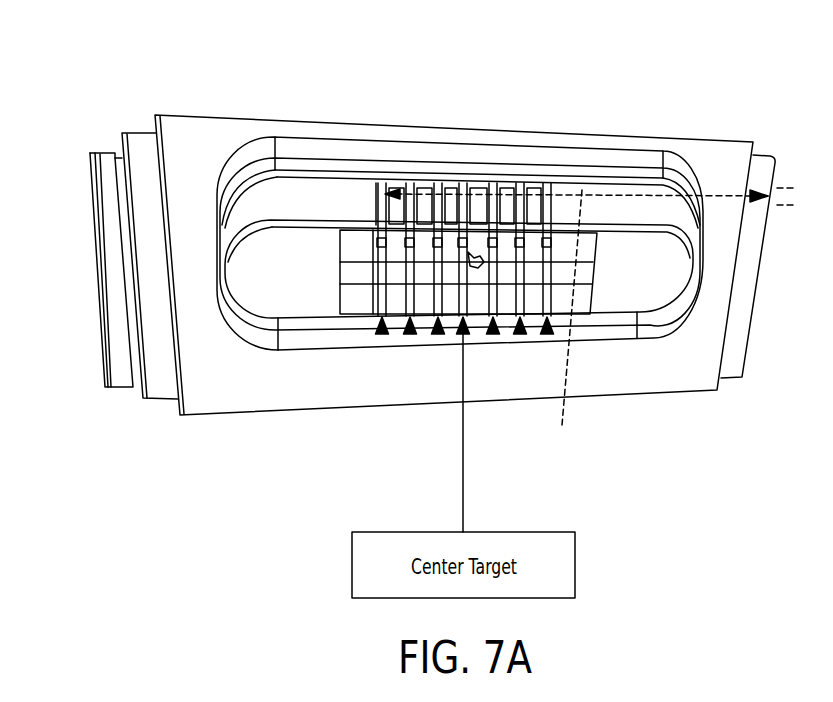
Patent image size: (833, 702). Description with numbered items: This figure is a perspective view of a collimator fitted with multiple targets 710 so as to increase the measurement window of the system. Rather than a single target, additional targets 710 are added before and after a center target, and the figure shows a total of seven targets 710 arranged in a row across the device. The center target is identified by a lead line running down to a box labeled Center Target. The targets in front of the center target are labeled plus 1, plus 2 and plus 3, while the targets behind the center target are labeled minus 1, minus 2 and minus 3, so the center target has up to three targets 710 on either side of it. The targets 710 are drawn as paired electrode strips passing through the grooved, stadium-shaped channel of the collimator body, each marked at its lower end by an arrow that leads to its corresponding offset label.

The targets 710 is at (438, 181).
The first offset electrode pair (+1/-1) 1 is at (438, 334).
The second offset electrode pair (+2/-2) 2 is at (410, 334).
The third offset electrode pair (+3/-3) 3 is at (382, 334).